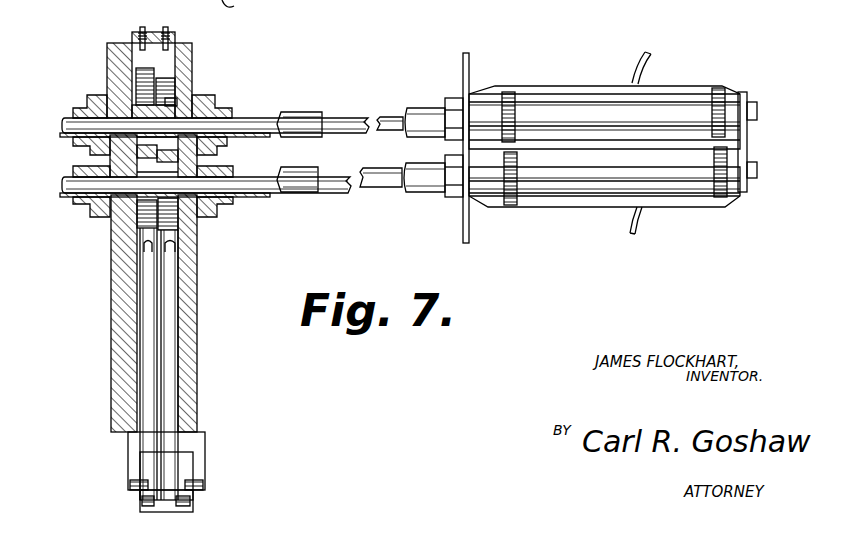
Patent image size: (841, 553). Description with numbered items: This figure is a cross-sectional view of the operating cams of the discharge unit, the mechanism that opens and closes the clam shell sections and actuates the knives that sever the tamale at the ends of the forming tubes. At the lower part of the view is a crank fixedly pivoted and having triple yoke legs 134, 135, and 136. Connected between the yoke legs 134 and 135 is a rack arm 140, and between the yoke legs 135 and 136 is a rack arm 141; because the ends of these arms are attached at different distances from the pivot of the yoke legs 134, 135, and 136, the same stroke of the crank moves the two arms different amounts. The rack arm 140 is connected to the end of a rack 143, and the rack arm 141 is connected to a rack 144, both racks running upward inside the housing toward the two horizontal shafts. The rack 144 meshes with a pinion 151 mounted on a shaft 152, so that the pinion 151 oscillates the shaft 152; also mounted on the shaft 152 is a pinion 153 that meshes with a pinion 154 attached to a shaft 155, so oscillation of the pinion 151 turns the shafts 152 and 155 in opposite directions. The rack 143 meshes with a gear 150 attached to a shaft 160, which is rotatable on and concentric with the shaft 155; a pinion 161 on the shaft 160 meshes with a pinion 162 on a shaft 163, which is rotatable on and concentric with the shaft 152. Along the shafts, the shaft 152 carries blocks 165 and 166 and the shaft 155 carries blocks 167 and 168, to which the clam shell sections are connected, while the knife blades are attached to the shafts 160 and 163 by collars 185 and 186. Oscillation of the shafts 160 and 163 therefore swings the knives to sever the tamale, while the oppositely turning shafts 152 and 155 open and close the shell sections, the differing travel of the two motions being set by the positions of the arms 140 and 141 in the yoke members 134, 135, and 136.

The yoke leg 134 is at (190, 470).
The yoke leg 135 is at (165, 480).
The yoke leg 136 is at (143, 472).
The rack arm 140 is at (175, 381).
The rack arm 141 is at (150, 378).
The rack 143 is at (167, 82).
The rack 144 is at (140, 80).
The gear 150 is at (170, 100).
The pinion 151 is at (152, 205).
The shaft 152 is at (70, 192).
The pinion 153 is at (90, 166).
The pinion 154 is at (90, 108).
The shaft 155 is at (72, 128).
The shaft 160 is at (270, 117).
The pinion 161 is at (205, 108).
The pinion 162 is at (212, 168).
The shaft 163 is at (266, 195).
The block 165 is at (512, 190).
The block 166 is at (718, 187).
The block 167 is at (508, 105).
The block 168 is at (718, 92).
The collar 185 is at (452, 100).
The collar 186 is at (455, 197).